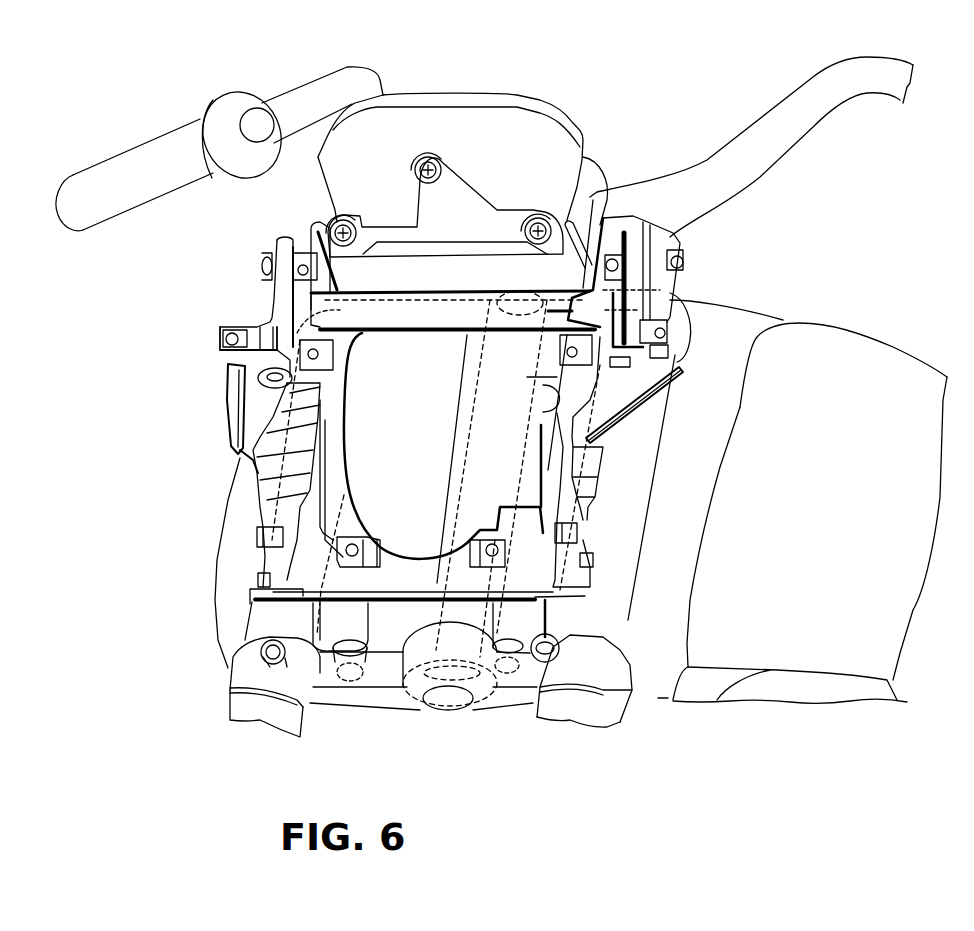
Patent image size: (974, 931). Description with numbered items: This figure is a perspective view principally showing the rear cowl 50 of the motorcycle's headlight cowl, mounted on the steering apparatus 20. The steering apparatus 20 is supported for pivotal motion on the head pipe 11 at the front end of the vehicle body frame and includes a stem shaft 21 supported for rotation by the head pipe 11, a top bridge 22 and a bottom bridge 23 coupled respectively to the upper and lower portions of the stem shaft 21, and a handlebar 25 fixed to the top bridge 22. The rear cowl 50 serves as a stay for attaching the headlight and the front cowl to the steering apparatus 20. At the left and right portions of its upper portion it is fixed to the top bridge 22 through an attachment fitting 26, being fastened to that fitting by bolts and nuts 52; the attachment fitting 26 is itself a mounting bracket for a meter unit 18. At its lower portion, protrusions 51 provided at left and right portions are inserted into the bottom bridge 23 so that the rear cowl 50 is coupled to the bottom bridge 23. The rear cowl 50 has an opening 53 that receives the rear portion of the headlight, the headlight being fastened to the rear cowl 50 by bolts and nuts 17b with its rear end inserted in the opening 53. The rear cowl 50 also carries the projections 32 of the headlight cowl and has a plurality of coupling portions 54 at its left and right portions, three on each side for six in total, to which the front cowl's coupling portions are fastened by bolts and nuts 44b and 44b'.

The head pipe 11 is at (457, 430).
The bolts and nuts 17b is at (570, 352).
The meter unit 18 is at (467, 97).
The steering apparatus 20 is at (638, 88).
The stem shaft 21 is at (467, 460).
The top bridge 22 is at (683, 313).
The bottom bridge 23 is at (610, 680).
The handlebar 25 is at (825, 77).
The attachment fitting 26 is at (497, 210).
The projections 32 is at (230, 425).
The bolts and nuts 44b is at (490, 438).
The bolts and nuts 44b' is at (516, 237).
The rear cowl 50 is at (620, 458).
The protrusions 51 is at (347, 673).
The bolts and nuts 52 is at (613, 262).
The opening 53 is at (367, 472).
The coupling portions 54 is at (271, 246).